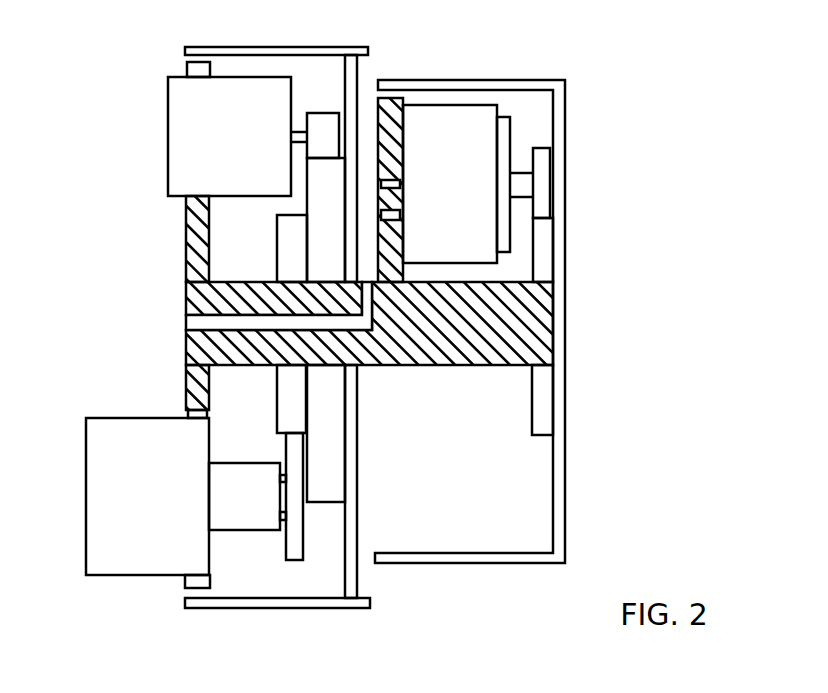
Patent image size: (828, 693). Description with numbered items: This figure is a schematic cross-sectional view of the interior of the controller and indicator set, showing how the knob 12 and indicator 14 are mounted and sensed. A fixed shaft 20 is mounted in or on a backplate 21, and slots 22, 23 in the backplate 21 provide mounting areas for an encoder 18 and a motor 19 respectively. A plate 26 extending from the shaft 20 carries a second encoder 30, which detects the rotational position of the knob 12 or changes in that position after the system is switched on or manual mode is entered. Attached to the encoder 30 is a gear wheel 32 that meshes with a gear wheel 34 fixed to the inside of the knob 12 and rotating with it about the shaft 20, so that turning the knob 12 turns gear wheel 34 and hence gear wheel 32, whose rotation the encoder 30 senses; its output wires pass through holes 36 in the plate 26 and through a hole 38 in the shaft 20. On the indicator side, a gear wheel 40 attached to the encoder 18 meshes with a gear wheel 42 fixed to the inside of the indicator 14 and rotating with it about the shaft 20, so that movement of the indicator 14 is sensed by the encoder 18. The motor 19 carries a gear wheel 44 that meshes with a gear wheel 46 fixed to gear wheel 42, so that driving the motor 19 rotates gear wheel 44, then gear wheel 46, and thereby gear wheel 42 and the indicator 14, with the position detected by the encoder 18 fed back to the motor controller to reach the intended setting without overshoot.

The knob 12 is at (502, 80).
The indicator 14 is at (275, 608).
The encoder 18 is at (167, 140).
The motor 19 is at (86, 474).
The fixed shaft 20 is at (450, 367).
The backplate 21 is at (185, 248).
The slot 22 is at (186, 70).
The slot 23 is at (185, 582).
The plate 26 is at (380, 107).
The encoder 30 is at (452, 103).
The gear wheel 32 is at (542, 148).
The gear wheel 34 is at (532, 398).
The holes 36 is at (406, 183).
The hole 38 is at (185, 323).
The gear wheel 40 is at (323, 113).
The gear wheel 42 is at (323, 505).
The gear wheel 44 is at (283, 542).
The gear wheel 46 is at (277, 403).